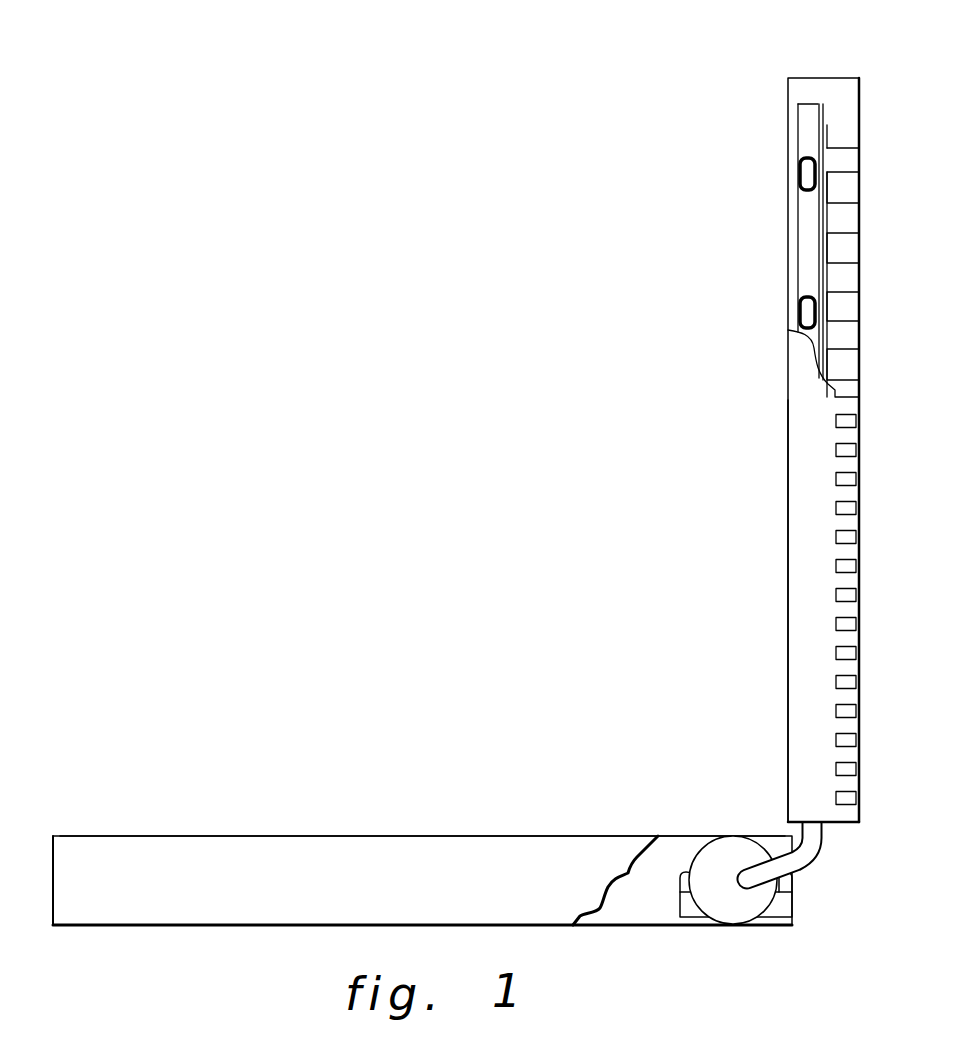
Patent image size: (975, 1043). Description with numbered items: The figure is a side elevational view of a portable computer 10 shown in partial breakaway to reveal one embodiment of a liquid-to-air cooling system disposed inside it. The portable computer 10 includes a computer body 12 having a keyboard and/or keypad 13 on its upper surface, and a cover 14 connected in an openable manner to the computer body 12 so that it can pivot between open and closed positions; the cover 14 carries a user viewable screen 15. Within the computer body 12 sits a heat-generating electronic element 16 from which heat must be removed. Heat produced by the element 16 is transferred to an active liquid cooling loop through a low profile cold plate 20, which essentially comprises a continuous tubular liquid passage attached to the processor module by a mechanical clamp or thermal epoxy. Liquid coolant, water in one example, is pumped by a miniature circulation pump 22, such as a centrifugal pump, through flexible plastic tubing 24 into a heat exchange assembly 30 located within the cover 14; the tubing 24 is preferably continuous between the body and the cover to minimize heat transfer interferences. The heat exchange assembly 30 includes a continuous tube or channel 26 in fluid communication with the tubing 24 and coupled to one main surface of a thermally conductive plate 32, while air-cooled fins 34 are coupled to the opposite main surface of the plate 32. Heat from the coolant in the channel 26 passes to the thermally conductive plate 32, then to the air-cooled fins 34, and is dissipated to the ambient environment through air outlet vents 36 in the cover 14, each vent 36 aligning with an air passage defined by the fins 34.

The portable computer 10 is at (550, 570).
The computer body 12 is at (368, 852).
The keyboard and/or keypad 13 is at (498, 834).
The cover 14 is at (800, 712).
The user viewable screen 15 is at (788, 630).
The heat-generating electronic element 16 is at (681, 912).
The low profile cold plate 20 is at (791, 890).
The miniature circulation pump 22 is at (731, 910).
The flexible plastic tubing 24 is at (813, 843).
The continuous tube or channel 26 is at (805, 272).
The heat exchange assembly 30 is at (853, 72).
The thermally conductive plate 32 is at (818, 104).
The air-cooled fins 34 is at (845, 322).
The air outlet vents 36 is at (836, 451).